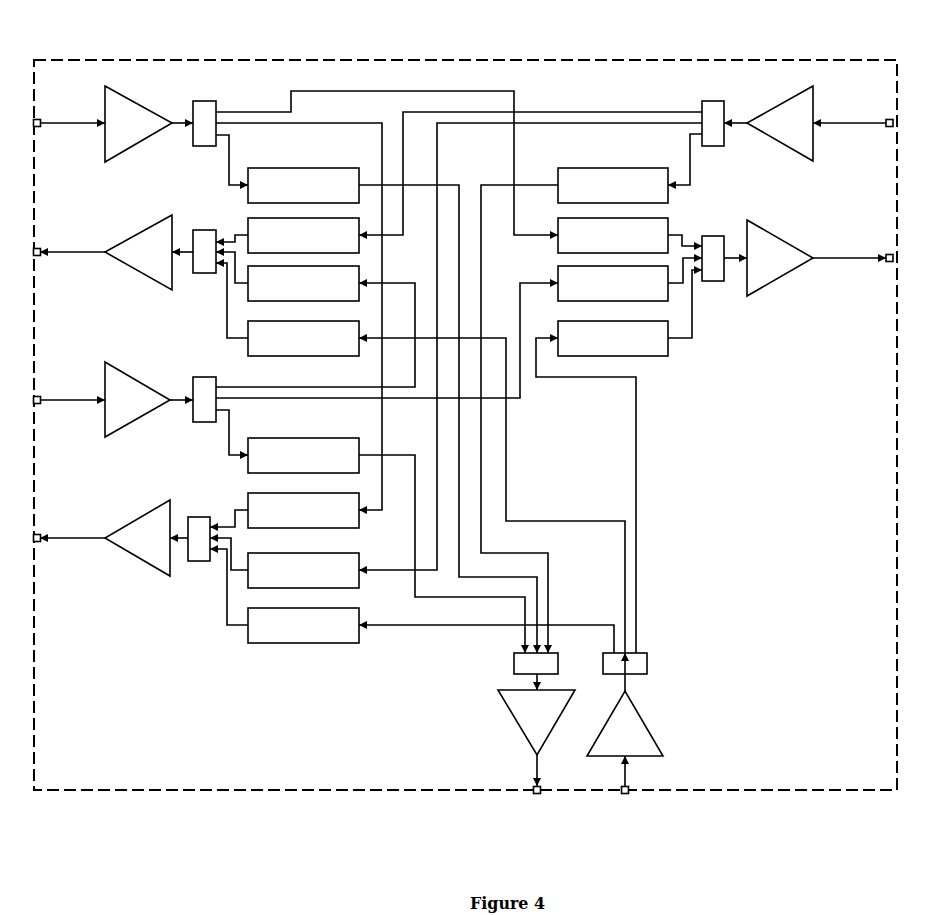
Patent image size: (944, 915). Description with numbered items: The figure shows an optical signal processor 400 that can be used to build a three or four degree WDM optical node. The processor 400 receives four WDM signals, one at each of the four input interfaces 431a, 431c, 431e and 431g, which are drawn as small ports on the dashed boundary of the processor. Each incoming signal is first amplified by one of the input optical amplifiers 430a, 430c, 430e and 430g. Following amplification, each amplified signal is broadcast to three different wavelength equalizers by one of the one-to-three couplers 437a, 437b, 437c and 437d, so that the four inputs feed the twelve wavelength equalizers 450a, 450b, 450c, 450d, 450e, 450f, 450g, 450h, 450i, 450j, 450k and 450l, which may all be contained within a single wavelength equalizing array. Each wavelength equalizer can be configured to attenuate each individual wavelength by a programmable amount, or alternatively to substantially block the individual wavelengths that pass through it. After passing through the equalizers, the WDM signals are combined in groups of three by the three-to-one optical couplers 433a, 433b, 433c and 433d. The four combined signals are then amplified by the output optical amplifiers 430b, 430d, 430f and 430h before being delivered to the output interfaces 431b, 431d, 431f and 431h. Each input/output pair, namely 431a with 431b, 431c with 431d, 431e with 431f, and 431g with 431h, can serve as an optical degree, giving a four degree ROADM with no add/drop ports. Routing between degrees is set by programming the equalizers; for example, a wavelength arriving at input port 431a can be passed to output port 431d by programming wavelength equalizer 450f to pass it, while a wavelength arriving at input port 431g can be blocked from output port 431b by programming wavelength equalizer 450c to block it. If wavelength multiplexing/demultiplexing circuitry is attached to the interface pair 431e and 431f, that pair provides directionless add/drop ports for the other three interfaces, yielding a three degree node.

The optical signal processor 400 is at (94, 45).
The optical amplifier 430a is at (133, 102).
The optical amplifier 430b is at (156, 224).
The optical amplifier 430c is at (813, 115).
The optical amplifier 430d is at (801, 251).
The optical amplifier 430e is at (640, 716).
The optical amplifier 430f is at (523, 736).
The optical amplifier 430g is at (132, 382).
The optical amplifier 430h is at (153, 510).
The optical interface 431a is at (39, 128).
The optical interface 431b is at (39, 258).
The optical interface 431c is at (889, 128).
The optical interface 431d is at (887, 265).
The optical interface 431e is at (628, 788).
The optical interface 431f is at (541, 788).
The optical interface 431g is at (39, 405).
The optical interface 431h is at (39, 544).
The optical coupler 433a is at (200, 517).
The optical coupler 433b is at (200, 230).
The optical coupler 433c is at (708, 236).
The optical coupler 433d is at (555, 653).
The 1:3 coupler 437a is at (211, 102).
The 1:3 coupler 437b is at (727, 112).
The 1:3 coupler 437c is at (212, 378).
The 1:3 coupler 437d is at (647, 653).
The wavelength equalizer 450a is at (353, 194).
The wavelength equalizer 450b is at (353, 244).
The wavelength equalizer 450c is at (352, 292).
The wavelength equalizer 450d is at (353, 347).
The wavelength equalizer 450e is at (663, 194).
The wavelength equalizer 450f is at (658, 244).
The wavelength equalizer 450g is at (663, 292).
The wavelength equalizer 450h is at (663, 347).
The wavelength equalizer 450i is at (347, 519).
The wavelength equalizer 450j is at (347, 579).
The wavelength equalizer 450k is at (352, 464).
The wavelength equalizer 450l is at (347, 634).